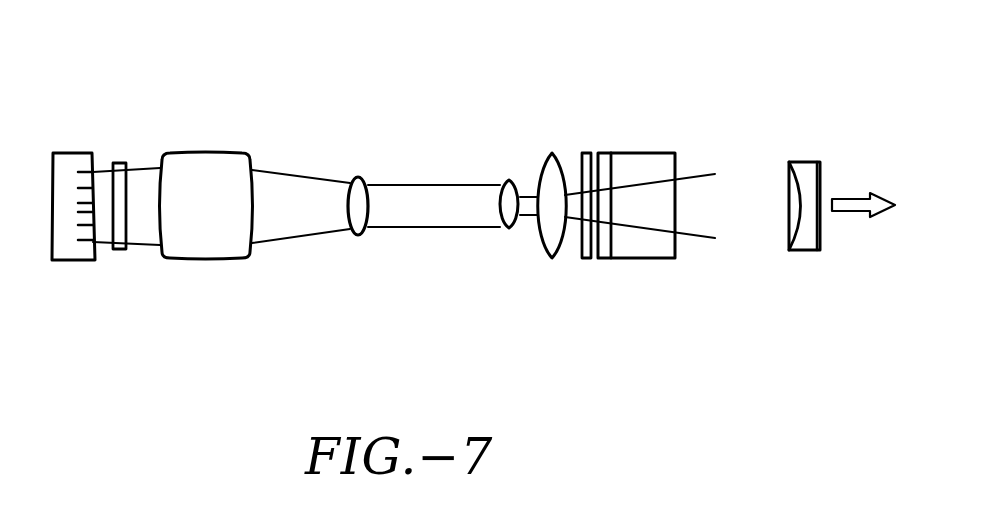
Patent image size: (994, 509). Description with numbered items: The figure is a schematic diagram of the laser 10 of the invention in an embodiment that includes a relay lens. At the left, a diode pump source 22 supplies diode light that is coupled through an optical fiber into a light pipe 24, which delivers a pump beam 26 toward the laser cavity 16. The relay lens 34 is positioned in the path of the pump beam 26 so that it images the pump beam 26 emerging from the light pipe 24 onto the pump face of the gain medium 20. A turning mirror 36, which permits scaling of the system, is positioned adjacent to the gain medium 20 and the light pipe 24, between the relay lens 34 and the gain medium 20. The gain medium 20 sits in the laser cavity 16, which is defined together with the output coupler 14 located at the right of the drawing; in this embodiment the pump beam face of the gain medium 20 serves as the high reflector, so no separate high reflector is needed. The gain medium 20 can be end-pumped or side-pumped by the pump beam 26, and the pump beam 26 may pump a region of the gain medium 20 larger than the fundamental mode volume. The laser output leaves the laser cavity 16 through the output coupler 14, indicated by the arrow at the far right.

The laser 10 is at (744, 86).
The output coupler 14 is at (808, 170).
The laser cavity 16 is at (823, 265).
The gain medium 20 is at (632, 160).
The diode pump source 22 is at (68, 160).
The light pipe 24 is at (392, 192).
The pump beam 26 is at (531, 196).
The relay lens 34 is at (552, 153).
The turning mirror 36 is at (587, 153).